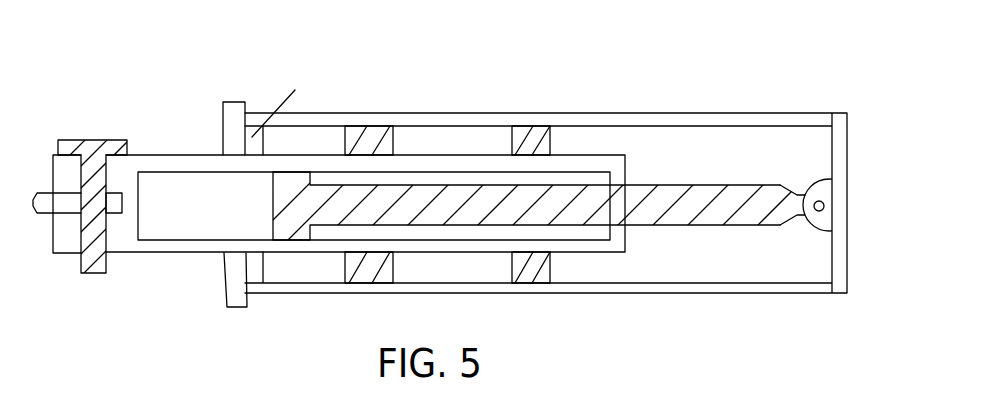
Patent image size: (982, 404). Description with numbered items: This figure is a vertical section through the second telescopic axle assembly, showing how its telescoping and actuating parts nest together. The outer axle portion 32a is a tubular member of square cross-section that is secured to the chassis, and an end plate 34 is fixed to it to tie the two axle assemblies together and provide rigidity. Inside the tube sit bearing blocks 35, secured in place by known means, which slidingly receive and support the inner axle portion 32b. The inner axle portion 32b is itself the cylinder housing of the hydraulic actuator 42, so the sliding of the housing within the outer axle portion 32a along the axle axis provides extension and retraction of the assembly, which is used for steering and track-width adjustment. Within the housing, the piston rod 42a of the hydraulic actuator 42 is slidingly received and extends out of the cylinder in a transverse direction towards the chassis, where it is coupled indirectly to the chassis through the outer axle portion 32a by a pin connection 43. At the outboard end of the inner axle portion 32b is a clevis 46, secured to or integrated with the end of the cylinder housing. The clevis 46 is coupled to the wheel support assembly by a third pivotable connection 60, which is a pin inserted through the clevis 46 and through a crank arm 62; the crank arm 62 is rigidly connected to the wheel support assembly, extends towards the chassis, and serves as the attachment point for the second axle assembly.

The outer axle portion 32a is at (673, 113).
The inner axle portion 32b is at (170, 253).
The end plate 34 is at (240, 107).
The bearing block 35 is at (372, 138).
The hydraulic actuator 42 is at (607, 253).
The piston rod 42a is at (722, 225).
The pin connection 43 is at (822, 203).
The clevis 46 is at (128, 155).
The third pivotable connection 60 is at (89, 148).
The crank arm 62 is at (48, 198).